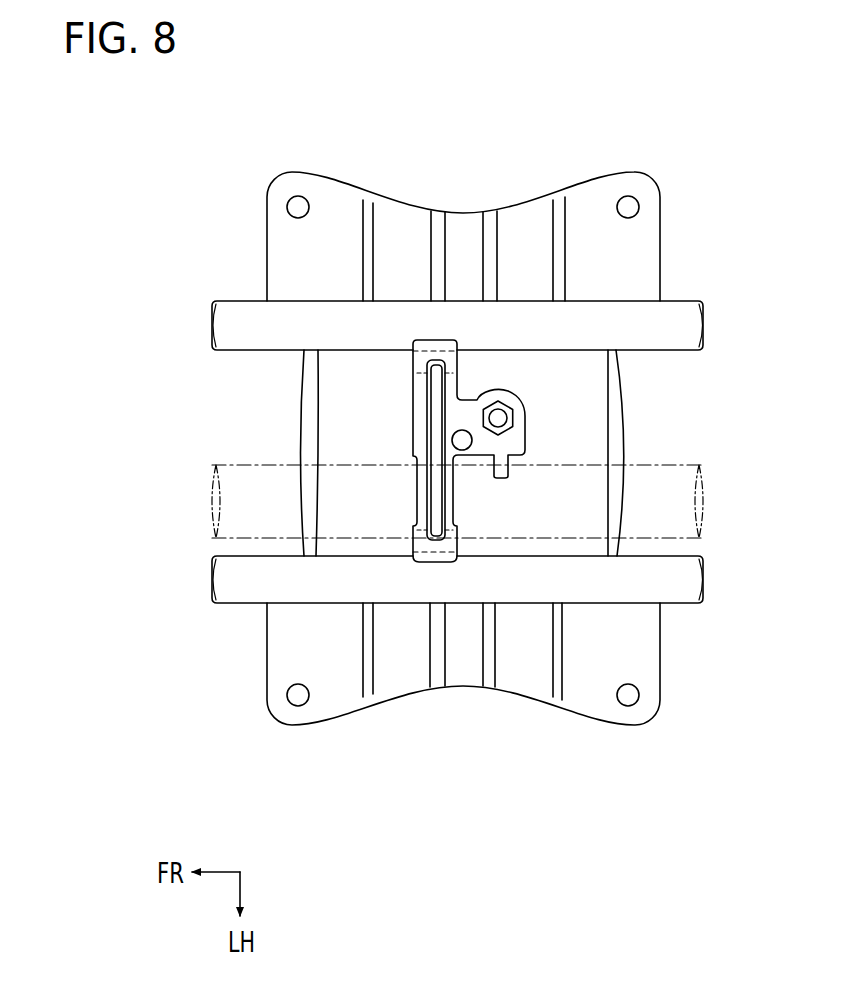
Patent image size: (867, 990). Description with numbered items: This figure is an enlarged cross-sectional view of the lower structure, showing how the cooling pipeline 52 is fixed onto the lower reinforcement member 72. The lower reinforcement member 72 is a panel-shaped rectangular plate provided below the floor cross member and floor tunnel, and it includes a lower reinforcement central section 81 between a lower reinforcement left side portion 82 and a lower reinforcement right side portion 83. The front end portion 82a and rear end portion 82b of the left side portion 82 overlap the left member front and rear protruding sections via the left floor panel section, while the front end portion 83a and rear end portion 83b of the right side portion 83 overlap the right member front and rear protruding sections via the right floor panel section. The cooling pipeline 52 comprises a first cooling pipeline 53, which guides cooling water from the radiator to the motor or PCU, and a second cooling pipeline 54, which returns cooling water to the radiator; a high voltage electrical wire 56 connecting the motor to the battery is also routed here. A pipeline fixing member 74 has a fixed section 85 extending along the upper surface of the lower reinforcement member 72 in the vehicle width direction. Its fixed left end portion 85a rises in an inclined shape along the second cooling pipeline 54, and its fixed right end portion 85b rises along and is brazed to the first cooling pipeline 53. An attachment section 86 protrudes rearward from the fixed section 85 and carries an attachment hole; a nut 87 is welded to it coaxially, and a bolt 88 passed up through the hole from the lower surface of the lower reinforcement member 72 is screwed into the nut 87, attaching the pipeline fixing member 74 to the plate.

The cooling pipeline 52 is at (365, 452).
The first cooling pipeline 53 is at (232, 332).
The second cooling pipeline 54 is at (391, 563).
The high voltage electrical wire 56 is at (690, 540).
The lower reinforcement member 72 is at (460, 446).
The pipeline fixing member 74 is at (411, 443).
The lower reinforcement central section 81 is at (446, 451).
The lower reinforcement left side portion 82 is at (461, 702).
The front end portion of the lower reinforcement left side portion 82a is at (280, 710).
The rear end portion of the lower reinforcement left side portion 82b is at (645, 709).
The lower reinforcement right side portion 83 is at (460, 197).
The front end portion of the lower reinforcement right side portion 83a is at (287, 186).
The rear end portion of the lower reinforcement right side portion 83b is at (641, 184).
The fixed section 85 is at (329, 451).
The fixed left end portion 85a is at (432, 557).
The fixed right end portion 85b is at (440, 344).
The attachment section 86 is at (604, 409).
The nut 87 is at (511, 424).
The bolt 88 is at (503, 413).